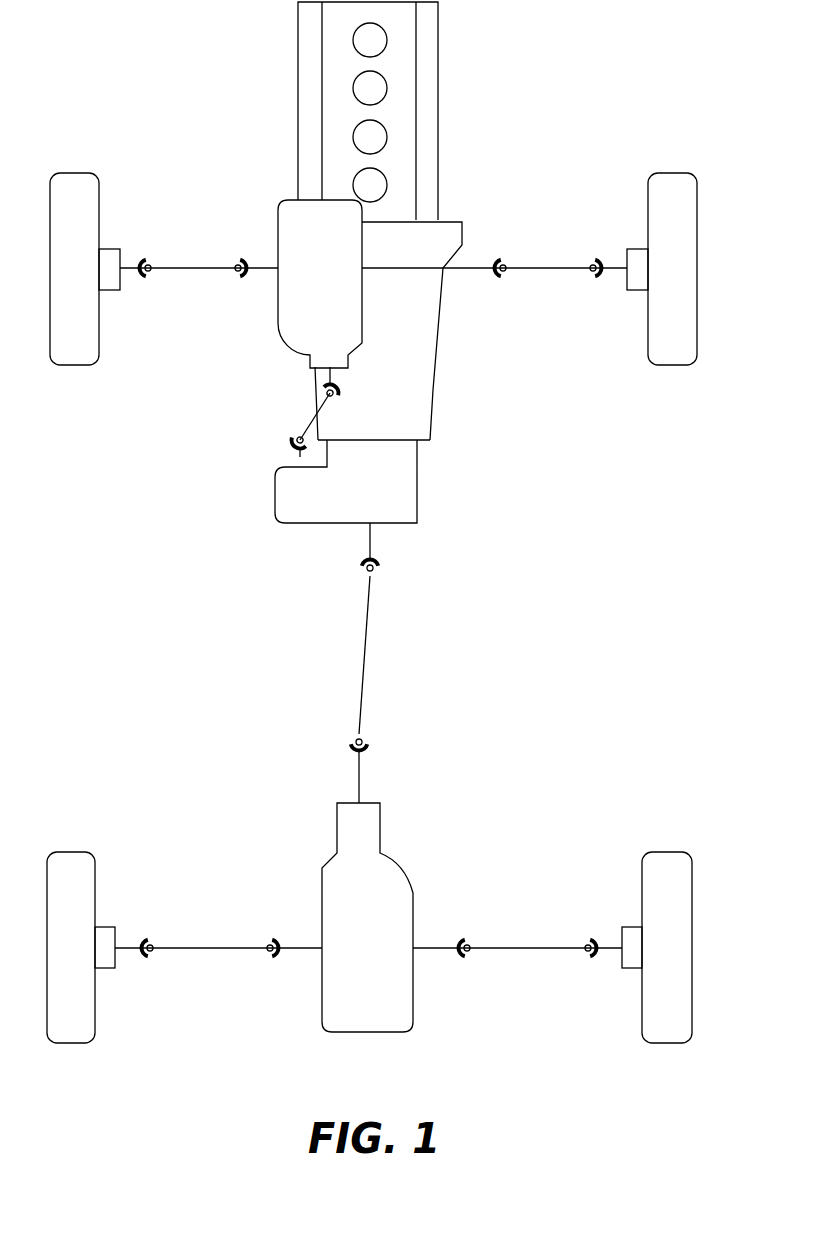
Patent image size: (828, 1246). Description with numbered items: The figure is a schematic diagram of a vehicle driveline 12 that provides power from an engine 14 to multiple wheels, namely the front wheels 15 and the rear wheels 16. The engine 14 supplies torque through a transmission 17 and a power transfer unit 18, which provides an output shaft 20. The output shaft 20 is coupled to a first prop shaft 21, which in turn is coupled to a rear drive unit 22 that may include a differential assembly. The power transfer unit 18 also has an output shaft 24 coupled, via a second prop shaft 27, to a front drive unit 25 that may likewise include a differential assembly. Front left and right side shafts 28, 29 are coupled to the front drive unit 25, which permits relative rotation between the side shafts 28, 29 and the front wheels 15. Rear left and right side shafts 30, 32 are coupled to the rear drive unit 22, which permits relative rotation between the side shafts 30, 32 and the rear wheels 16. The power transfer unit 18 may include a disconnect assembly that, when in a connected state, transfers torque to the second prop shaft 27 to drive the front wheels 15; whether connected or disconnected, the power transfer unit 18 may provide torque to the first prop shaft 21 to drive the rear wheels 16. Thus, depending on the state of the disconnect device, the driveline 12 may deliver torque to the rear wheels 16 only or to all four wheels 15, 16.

The vehicle driveline 12 is at (478, 608).
The engine 14 is at (438, 50).
The front wheels 15 is at (76, 173).
The rear wheels 16 is at (73, 852).
The transmission 17 is at (435, 337).
The power transfer unit 18 is at (418, 492).
The output shaft 20 is at (370, 540).
The first prop shaft 21 is at (368, 618).
The rear drive unit 22 is at (362, 1032).
The output shaft 24 is at (298, 457).
The front drive unit 25 is at (278, 313).
The second prop shaft 27 is at (316, 418).
The front left side shaft 28 is at (200, 267).
The front right side shaft 29 is at (548, 267).
The rear left side shaft 30 is at (210, 947).
The rear right side shaft 32 is at (532, 947).